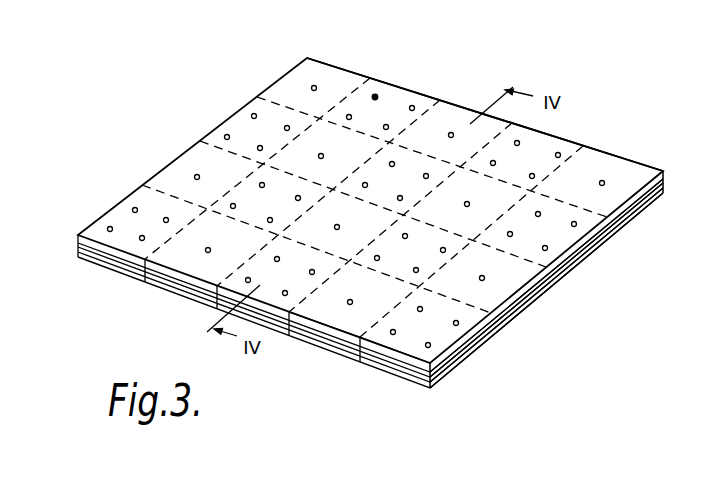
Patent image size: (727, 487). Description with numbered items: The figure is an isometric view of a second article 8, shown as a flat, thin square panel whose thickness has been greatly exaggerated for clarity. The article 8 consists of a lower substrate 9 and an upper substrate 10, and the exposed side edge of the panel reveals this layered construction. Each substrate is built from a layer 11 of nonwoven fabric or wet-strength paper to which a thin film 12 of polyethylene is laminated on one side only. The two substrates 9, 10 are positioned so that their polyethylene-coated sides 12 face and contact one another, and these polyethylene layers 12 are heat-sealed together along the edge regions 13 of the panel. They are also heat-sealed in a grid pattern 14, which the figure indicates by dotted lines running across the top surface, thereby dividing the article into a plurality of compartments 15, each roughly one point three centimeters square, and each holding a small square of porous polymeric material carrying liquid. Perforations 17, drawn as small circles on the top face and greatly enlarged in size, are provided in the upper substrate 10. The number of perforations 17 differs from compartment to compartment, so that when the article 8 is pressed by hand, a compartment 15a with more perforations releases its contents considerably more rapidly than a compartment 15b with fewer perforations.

The second article 8 is at (158, 171).
The lower substrate 9 is at (82, 257).
The upper substrate 10 is at (78, 233).
The layer of nonwoven fabric or wet-strength paper 11 is at (182, 288).
The thin film of polyethylene 12 is at (107, 256).
The edge regions 13 is at (468, 348).
The grid pattern 14 is at (587, 147).
The compartments 15 is at (563, 246).
The compartment 15a is at (397, 346).
The compartment 15b is at (328, 320).
The perforations 17 is at (375, 96).